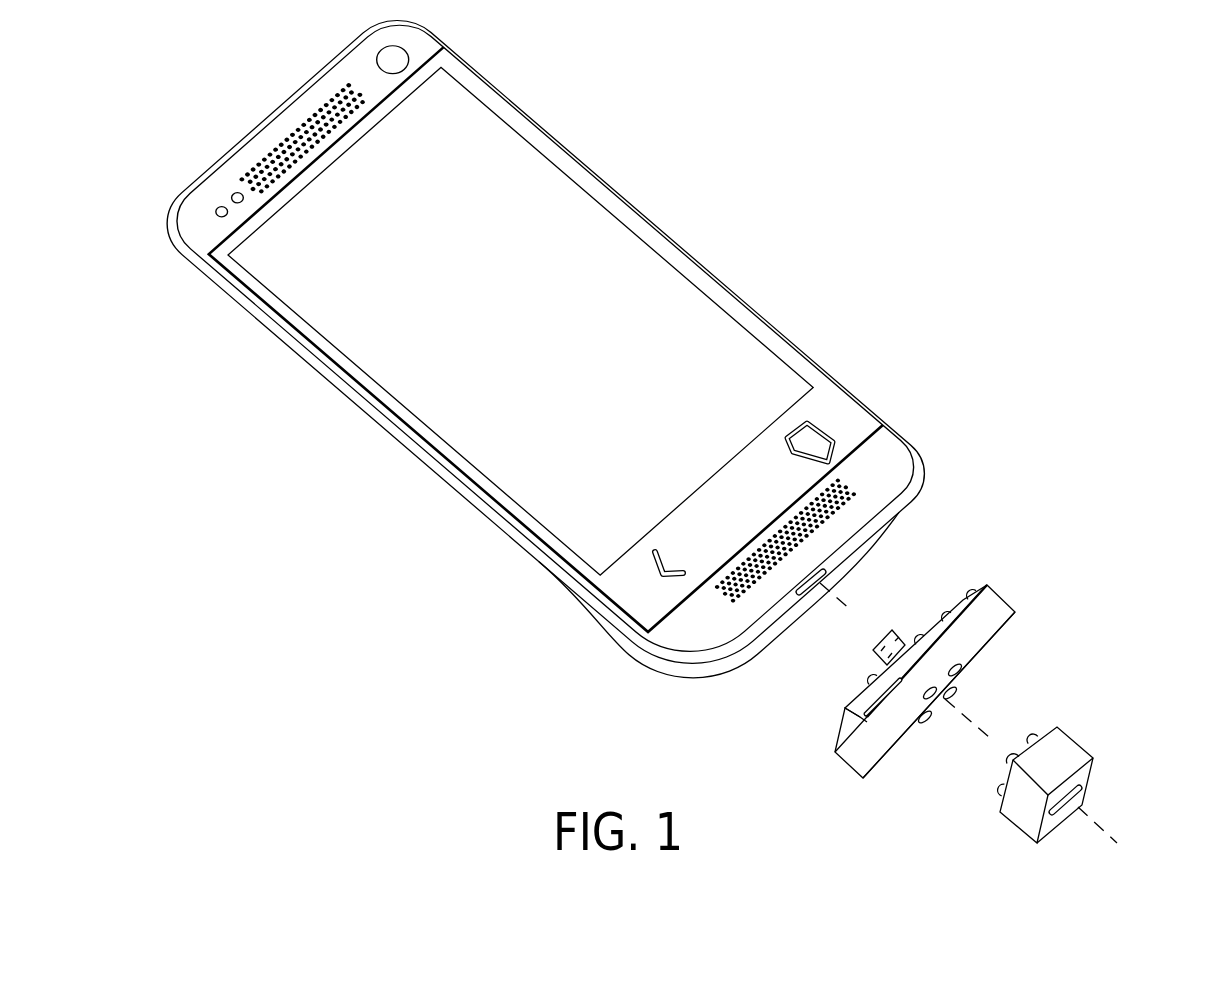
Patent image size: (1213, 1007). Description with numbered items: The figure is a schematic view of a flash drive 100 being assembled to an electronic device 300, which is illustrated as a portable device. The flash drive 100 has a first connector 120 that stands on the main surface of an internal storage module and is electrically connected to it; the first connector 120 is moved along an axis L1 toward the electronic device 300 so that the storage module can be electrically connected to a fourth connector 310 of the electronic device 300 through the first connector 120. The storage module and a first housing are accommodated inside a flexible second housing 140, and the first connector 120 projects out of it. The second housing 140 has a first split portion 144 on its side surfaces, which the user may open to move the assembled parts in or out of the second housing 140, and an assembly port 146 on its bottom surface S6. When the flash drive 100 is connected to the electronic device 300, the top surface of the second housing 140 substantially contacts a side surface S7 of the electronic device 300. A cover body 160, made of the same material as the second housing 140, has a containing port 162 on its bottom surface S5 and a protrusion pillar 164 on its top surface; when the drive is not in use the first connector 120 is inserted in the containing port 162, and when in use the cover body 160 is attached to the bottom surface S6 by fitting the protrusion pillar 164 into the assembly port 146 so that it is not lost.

The electronic device 300 is at (556, 356).
The side surface of the electronic device S7 is at (895, 529).
The fourth connector 310 is at (808, 598).
The flash drive 100 is at (986, 680).
The axis L1 is at (857, 615).
The first connector 120 is at (870, 656).
The second housing 140 is at (942, 671).
The bottom surface of the second housing S6 is at (1013, 645).
The first split portion 144 is at (846, 766).
The assembly port 146 is at (926, 720).
The cover body 160 is at (1082, 755).
The bottom surface of the cover body S5 is at (1099, 784).
The containing port 162 is at (1077, 794).
The protrusion pillar 164 is at (1036, 740).